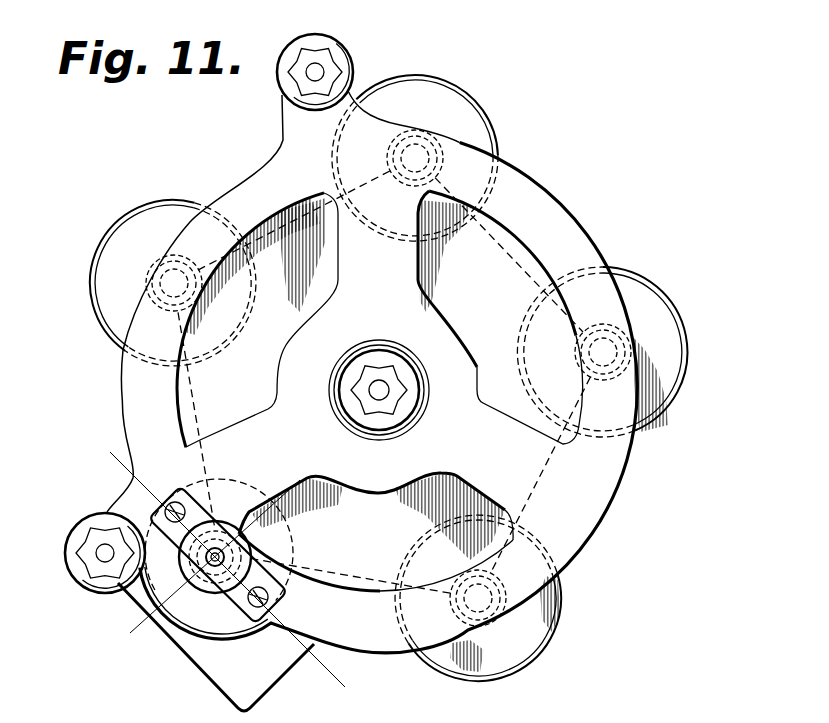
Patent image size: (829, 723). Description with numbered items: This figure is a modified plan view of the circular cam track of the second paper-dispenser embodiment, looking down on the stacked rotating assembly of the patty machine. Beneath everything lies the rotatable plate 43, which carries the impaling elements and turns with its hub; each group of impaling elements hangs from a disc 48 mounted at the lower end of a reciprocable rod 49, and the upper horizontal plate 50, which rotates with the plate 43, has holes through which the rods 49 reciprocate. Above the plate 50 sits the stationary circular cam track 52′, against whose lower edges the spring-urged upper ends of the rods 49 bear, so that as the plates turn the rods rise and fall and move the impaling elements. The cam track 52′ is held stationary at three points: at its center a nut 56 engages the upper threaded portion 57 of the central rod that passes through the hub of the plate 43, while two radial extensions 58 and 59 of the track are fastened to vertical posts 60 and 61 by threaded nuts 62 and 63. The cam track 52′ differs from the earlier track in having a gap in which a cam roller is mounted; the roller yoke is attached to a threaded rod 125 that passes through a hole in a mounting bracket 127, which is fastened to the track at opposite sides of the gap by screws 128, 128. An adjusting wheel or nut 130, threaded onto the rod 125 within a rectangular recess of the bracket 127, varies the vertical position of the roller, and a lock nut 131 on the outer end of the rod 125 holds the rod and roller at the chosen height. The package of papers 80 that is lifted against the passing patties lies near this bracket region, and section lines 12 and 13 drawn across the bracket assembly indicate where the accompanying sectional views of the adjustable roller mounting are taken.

The rotatable plate 43 is at (498, 122).
The disc 48 is at (457, 108).
The reciprocable rod 49 is at (478, 632).
The horizontal plate 50 is at (494, 304).
The cam track 52' is at (372, 387).
The nut 56 is at (380, 362).
The upper threaded portion 57 is at (391, 390).
The radial extension 58 is at (66, 556).
The radial extension 59 is at (320, 34).
The vertical post 60 is at (96, 560).
The vertical post 61 is at (330, 66).
The threaded nut 62 is at (96, 577).
The threaded nut 63 is at (292, 90).
The package of papers 80 is at (256, 680).
The threaded rod 125 is at (222, 538).
The mounting bracket 127 is at (232, 622).
The screws 128 is at (272, 597).
The adjusting wheel or nut 130 is at (214, 582).
The lock nut 131 is at (254, 552).
The section line 12- 12 is at (110, 418).
The section line 13- 13 is at (120, 612).